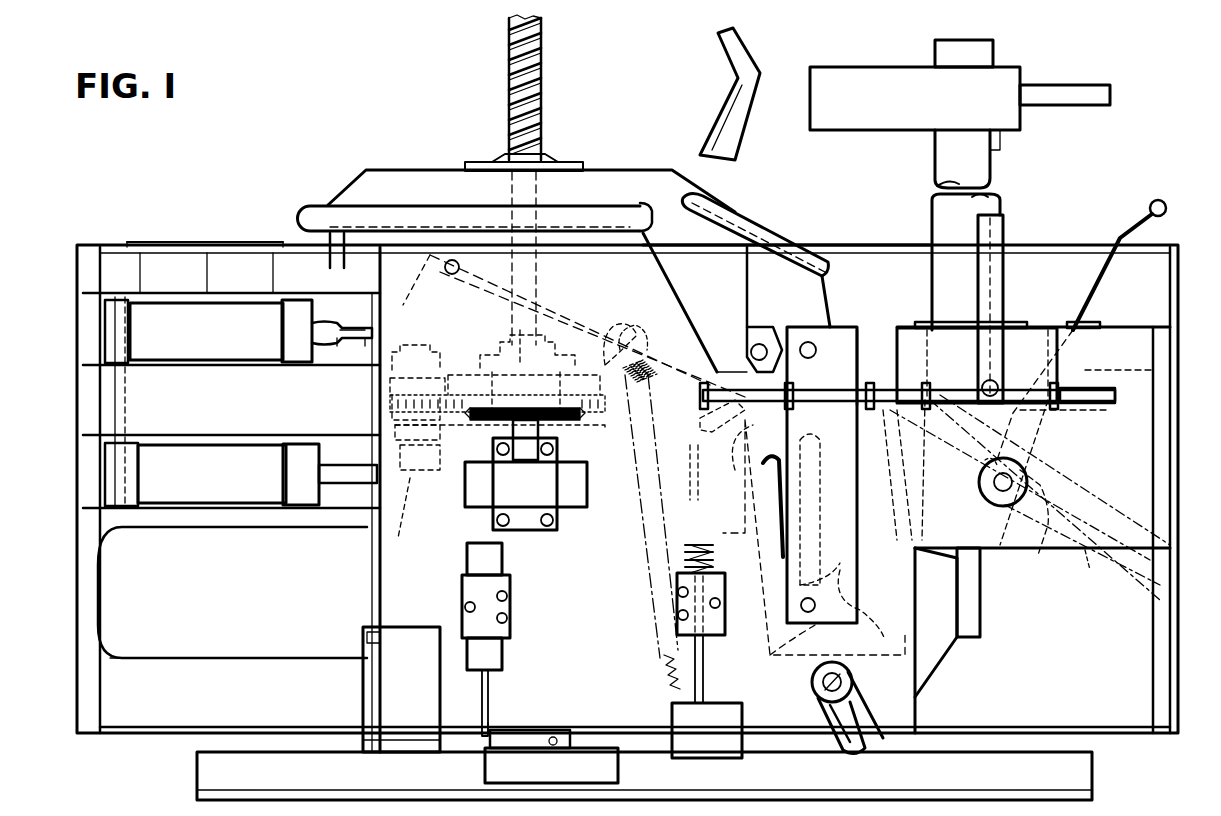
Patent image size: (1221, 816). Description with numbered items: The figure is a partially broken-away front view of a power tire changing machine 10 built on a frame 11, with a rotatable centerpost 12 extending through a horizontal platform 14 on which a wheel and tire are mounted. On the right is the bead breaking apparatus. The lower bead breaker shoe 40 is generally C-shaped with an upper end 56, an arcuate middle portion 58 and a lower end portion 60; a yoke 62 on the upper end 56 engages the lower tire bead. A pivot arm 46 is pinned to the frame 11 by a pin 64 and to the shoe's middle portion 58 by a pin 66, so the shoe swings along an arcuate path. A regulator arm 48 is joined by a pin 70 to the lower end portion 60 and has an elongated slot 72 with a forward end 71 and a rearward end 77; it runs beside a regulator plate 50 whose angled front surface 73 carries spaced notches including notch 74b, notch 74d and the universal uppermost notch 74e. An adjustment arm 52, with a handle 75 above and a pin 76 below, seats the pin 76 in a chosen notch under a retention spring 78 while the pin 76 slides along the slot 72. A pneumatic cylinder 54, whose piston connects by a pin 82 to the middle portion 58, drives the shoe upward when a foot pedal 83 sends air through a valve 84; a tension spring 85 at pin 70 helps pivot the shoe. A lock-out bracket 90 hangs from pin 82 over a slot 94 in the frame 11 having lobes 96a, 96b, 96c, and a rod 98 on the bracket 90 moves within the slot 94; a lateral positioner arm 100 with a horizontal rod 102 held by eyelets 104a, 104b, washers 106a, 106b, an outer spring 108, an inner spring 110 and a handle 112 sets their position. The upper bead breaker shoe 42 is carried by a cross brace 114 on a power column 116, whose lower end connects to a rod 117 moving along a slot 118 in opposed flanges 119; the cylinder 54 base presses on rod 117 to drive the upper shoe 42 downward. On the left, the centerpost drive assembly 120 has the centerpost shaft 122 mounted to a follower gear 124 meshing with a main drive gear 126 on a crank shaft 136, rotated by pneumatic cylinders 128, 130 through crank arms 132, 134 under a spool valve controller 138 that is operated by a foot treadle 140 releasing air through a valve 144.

The power tire changing machine 10 is at (307, 127).
The frame 11 is at (412, 268).
The rotatable centerpost 12 is at (545, 86).
The horizontal platform 14 is at (412, 180).
The lower bead breaker shoe 40 is at (835, 278).
The upper bead breaker shoe 42 is at (712, 110).
The pivot arm 46 is at (480, 298).
The regulator arm 48 is at (836, 475).
The regulator plate 50 is at (1161, 422).
The adjustment arm 52 is at (1090, 276).
The pneumatic cylinder 54 is at (807, 537).
The upper end 56 is at (774, 266).
The arcuate middle portion 58 is at (745, 308).
The lower end portion 60 is at (608, 325).
The yoke 62 is at (715, 202).
The pin 64 is at (448, 277).
The pin 66 is at (763, 338).
The pin 70 is at (642, 340).
The forward end 71 is at (975, 462).
The elongated slot 72 is at (1015, 558).
The angled front surface 73 is at (1008, 377).
The notch 74b is at (1085, 456).
The notch 74d is at (1093, 415).
The uppermost notch 74e is at (1096, 362).
The handle 75 is at (1133, 220).
The pin 76 is at (978, 482).
The rearward end 77 is at (1098, 572).
The retention spring 78 is at (1112, 489).
The pin 82 is at (818, 336).
The foot pedal 83 is at (690, 728).
The valve 84 is at (725, 618).
The tension spring 85 is at (641, 568).
The bracket 90 is at (858, 331).
The slot 94 is at (777, 534).
The lobe 96a is at (758, 472).
The lobe 96b is at (830, 509).
The lobe 96c is at (913, 567).
The rod 98 is at (806, 613).
The lateral positioner arm 100 is at (935, 412).
The horizontal rod 102 is at (1100, 388).
The eyelet 104a is at (933, 380).
The eyelet 104b is at (1048, 380).
The washer 106a is at (706, 388).
The washer 106b is at (872, 381).
The outer spring 108 is at (712, 428).
The inner spring 110 is at (884, 475).
The handle 112 is at (1003, 220).
The cross brace 114 is at (872, 76).
The power column 116 is at (990, 194).
The rod 117 is at (815, 690).
The slot 118 is at (838, 748).
The flange 119 is at (870, 740).
The centerpost drive assembly 120 is at (458, 533).
The shaft 122 is at (540, 257).
The follower gear 124 is at (476, 370).
The main drive gear 126 is at (392, 408).
The pneumatic cylinder 128 is at (220, 343).
The pneumatic cylinder 130 is at (220, 493).
The crank arm 132 is at (365, 340).
The crank arm 134 is at (370, 533).
The crank shaft 136 is at (440, 500).
The spool valve controller 138 is at (540, 490).
The foot treadle 140 is at (527, 757).
The valve 144 is at (512, 603).